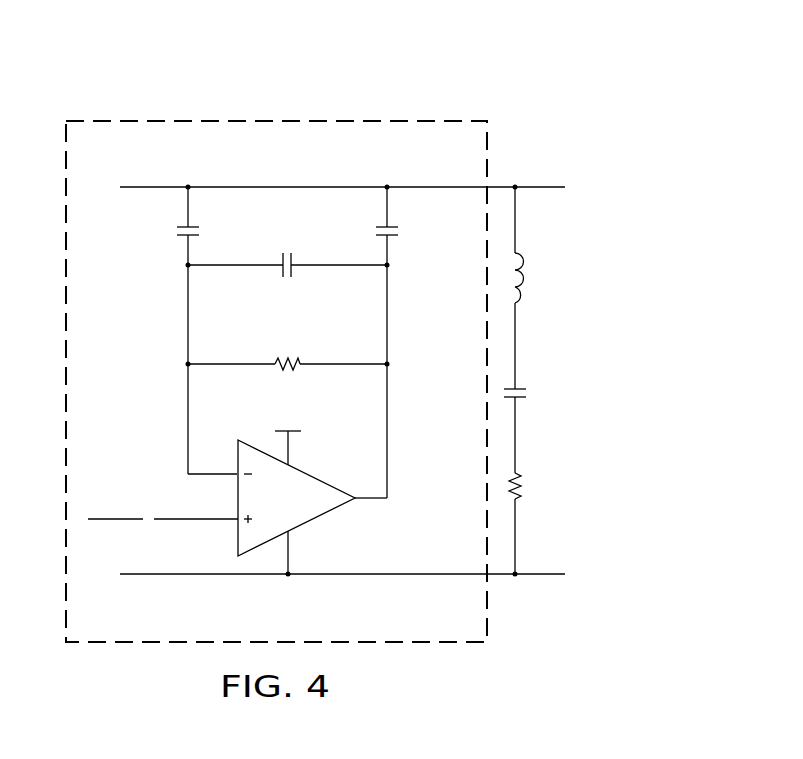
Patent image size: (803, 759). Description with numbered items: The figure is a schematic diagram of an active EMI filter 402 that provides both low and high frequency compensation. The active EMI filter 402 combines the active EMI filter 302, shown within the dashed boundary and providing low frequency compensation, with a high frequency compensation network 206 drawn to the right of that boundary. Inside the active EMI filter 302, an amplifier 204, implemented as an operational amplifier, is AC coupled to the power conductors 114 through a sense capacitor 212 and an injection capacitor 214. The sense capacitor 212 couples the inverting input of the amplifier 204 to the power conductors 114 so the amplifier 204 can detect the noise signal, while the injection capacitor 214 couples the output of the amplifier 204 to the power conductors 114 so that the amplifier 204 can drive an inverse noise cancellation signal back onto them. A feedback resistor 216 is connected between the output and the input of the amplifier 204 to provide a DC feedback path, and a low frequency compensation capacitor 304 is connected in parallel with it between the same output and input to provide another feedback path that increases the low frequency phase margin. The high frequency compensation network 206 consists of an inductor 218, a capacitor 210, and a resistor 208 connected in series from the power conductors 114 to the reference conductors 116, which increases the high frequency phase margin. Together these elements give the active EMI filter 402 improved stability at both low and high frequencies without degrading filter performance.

The active EMI filter 402 is at (392, 88).
The active EMI filter 302 is at (203, 115).
The power conductors 114 is at (337, 186).
The reference conductors 116 is at (205, 576).
The sense capacitor 212 is at (178, 233).
The injection capacitor 214 is at (398, 235).
The low frequency compensation capacitor 304 is at (283, 252).
The feedback resistor 216 is at (287, 360).
The amplifier 204 is at (237, 537).
The high frequency compensation network 206 is at (614, 371).
The inductor 218 is at (532, 278).
The capacitor 210 is at (527, 393).
The resistor 208 is at (521, 489).